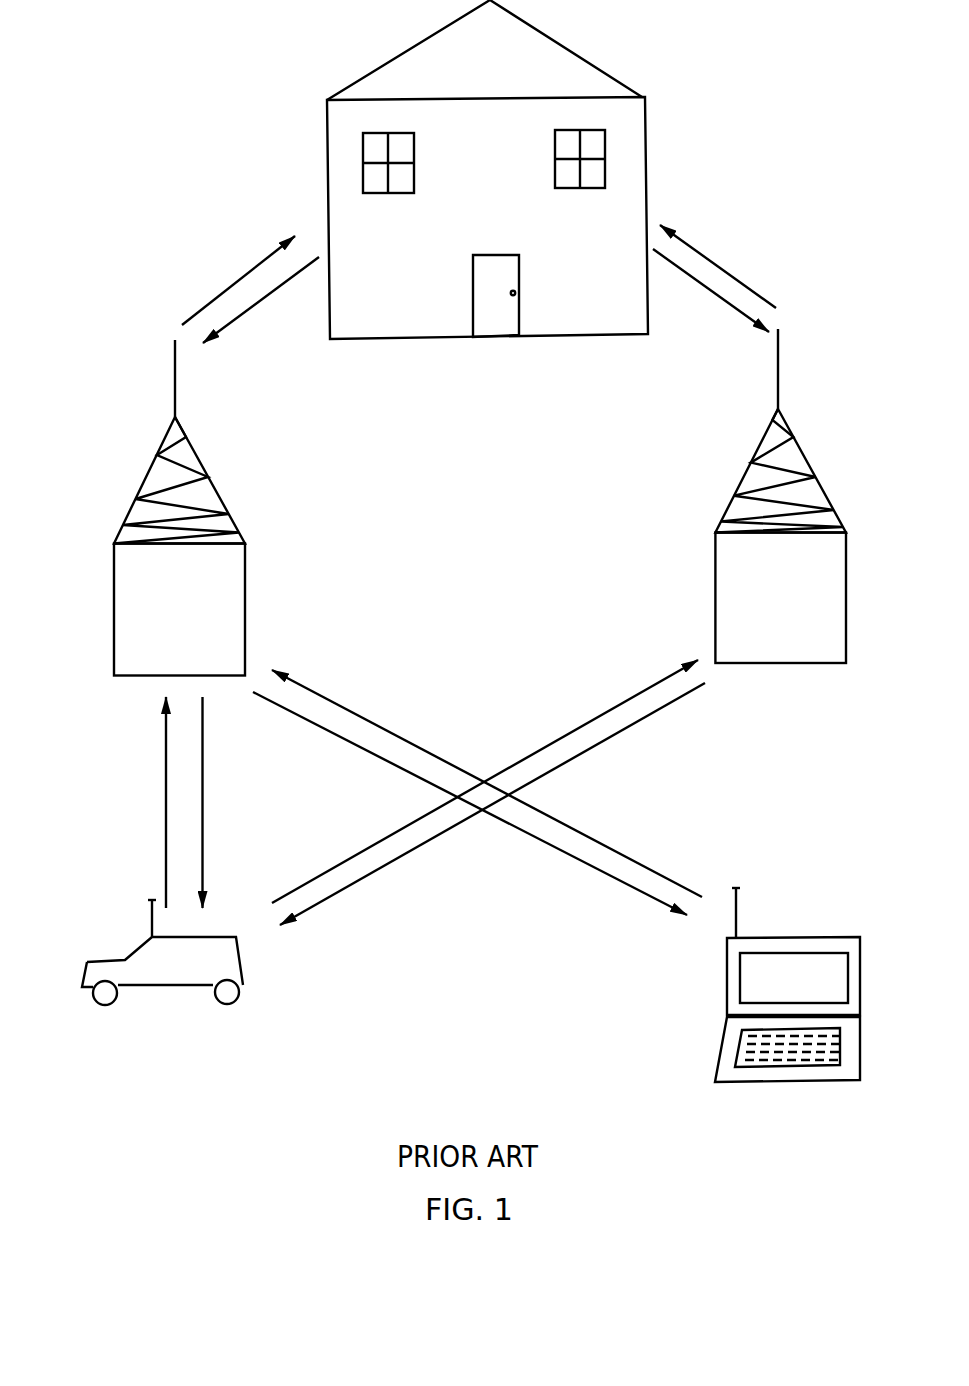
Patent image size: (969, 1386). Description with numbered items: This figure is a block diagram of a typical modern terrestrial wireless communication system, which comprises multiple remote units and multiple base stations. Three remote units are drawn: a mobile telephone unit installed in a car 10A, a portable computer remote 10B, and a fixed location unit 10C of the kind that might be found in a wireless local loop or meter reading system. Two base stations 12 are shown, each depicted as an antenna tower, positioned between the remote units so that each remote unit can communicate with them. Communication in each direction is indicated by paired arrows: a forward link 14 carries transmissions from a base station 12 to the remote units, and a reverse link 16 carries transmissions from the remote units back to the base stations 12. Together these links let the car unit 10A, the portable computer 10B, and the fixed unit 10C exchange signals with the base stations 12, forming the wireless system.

The mobile telephone unit installed in a car 10A is at (107, 958).
The portable computer remote 10B is at (833, 935).
The fixed location unit 10C is at (562, 43).
The base station 12 is at (148, 477).
The forward link 14 is at (256, 266).
The reverse link 16 is at (273, 292).